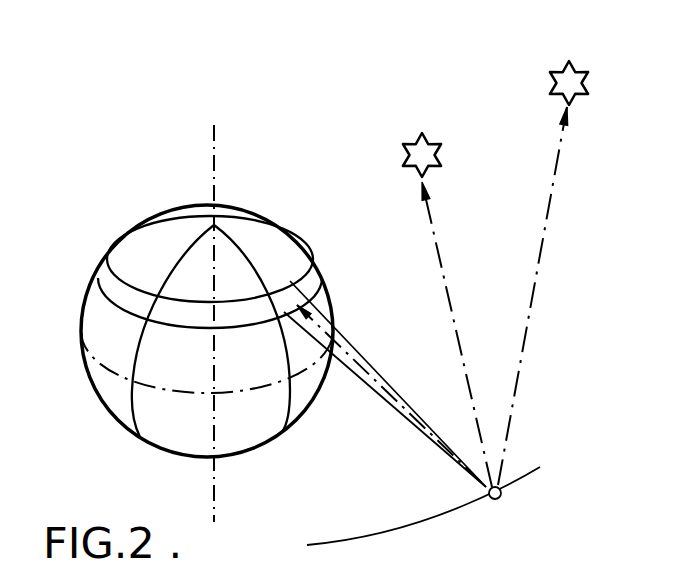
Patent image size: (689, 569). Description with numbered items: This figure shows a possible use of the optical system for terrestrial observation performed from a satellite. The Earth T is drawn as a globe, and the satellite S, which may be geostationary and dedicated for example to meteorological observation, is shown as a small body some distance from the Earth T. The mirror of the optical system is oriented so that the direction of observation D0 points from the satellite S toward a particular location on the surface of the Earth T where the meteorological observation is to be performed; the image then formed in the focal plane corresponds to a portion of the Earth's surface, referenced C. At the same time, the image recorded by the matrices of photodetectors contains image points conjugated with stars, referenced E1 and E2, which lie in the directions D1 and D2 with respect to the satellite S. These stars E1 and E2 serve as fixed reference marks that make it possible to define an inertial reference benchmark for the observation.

The Earth T is at (86, 292).
The portion of the surface of the Earth C is at (292, 307).
The direction of observation D0 is at (367, 368).
The direction of star E1 D1 is at (432, 223).
The direction of star E2 D2 is at (557, 164).
The star E1 is at (412, 152).
The star E2 is at (565, 66).
The satellite S is at (501, 497).